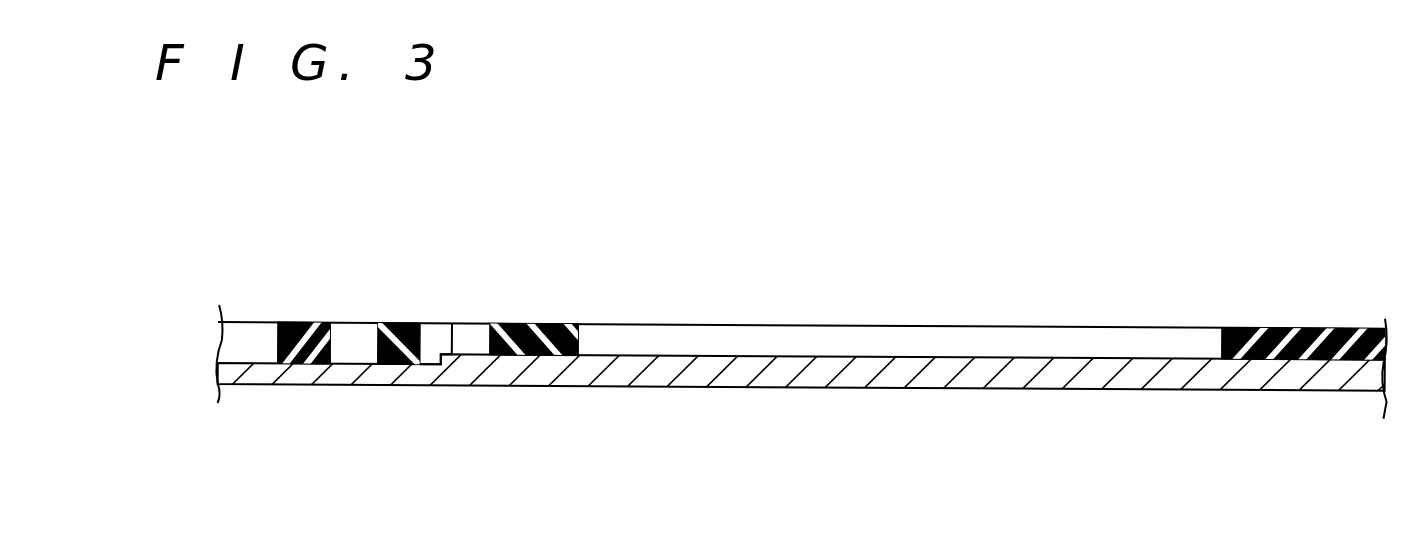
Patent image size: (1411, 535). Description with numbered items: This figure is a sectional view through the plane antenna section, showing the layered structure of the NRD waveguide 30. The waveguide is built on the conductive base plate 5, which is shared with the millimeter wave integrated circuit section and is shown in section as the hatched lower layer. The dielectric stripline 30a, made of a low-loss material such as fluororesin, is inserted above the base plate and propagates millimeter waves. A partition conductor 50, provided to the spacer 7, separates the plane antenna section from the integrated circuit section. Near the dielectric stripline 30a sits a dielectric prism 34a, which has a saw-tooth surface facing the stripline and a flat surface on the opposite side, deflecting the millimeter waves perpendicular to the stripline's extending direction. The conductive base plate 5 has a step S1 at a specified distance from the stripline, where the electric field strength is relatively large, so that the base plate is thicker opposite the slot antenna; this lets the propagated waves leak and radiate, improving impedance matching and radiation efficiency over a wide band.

The conductive base plate 5 is at (993, 357).
The spacer 7 is at (1300, 343).
The NRD waveguide 30 is at (595, 258).
The dielectric stripline 30a is at (403, 322).
The dielectric prism 34a is at (535, 322).
The partition conductor 50 is at (298, 322).
The step S1 is at (442, 359).